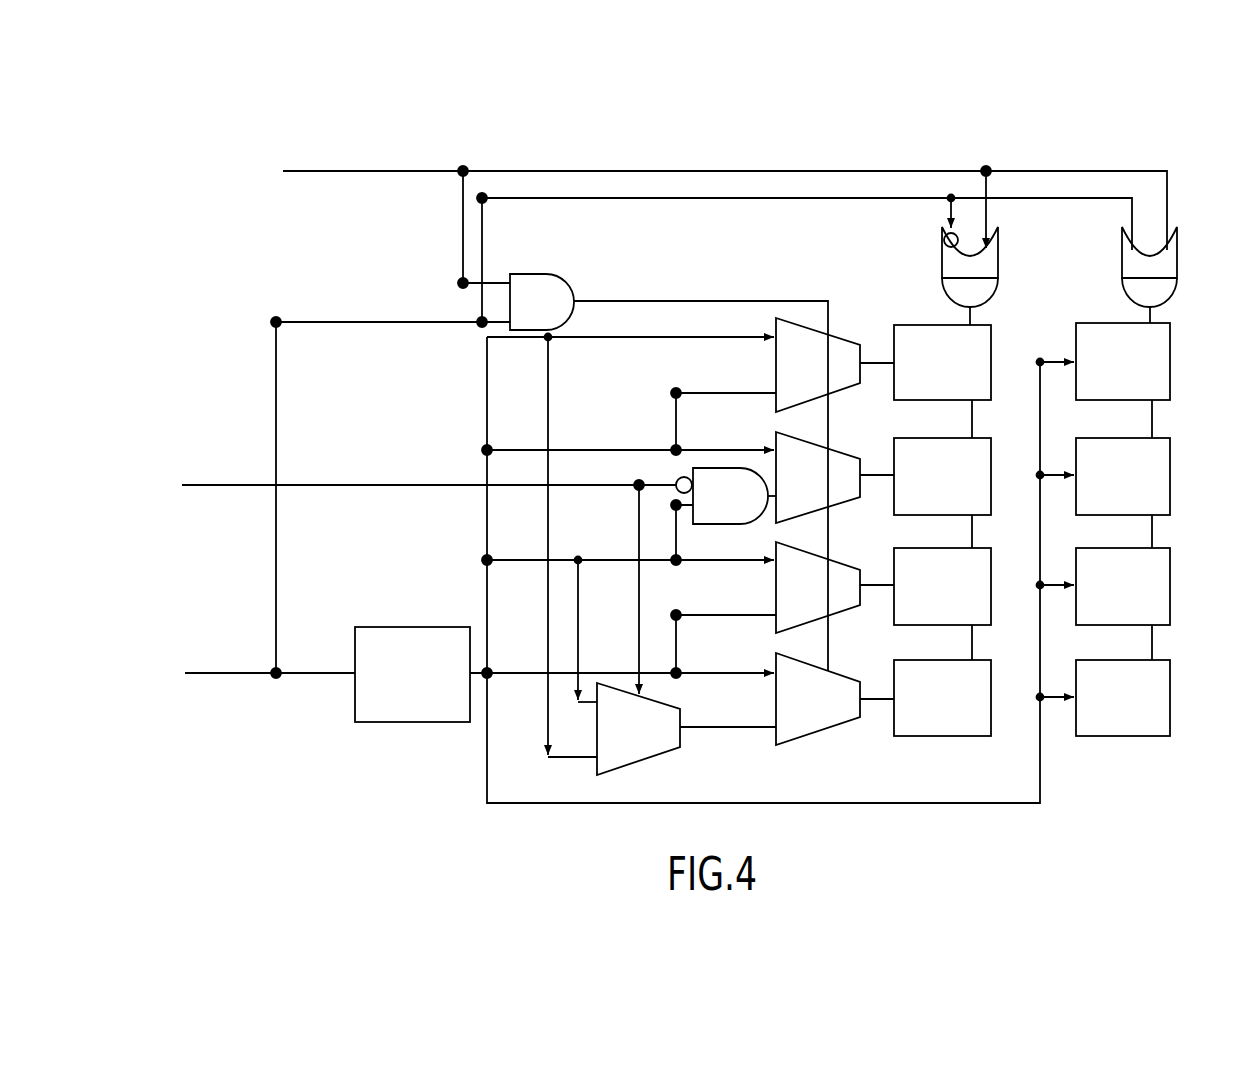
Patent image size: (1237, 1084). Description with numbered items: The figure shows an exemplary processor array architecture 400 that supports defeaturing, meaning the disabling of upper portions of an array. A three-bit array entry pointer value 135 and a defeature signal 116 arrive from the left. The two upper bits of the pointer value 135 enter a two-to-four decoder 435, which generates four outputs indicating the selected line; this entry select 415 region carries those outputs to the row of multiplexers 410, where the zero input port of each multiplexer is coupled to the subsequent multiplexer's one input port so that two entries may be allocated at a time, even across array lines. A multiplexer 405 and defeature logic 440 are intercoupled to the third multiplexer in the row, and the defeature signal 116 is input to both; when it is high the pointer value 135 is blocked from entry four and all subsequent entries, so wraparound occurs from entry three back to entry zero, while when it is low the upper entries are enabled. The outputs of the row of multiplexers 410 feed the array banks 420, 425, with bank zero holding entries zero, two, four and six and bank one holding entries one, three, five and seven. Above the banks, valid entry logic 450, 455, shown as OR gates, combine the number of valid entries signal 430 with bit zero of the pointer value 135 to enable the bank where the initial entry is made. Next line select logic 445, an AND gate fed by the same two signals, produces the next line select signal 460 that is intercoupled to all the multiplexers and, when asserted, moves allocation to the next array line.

The array architecture 400 is at (1228, 138).
The multiplexer 405 is at (660, 753).
The row of multiplexers 410 is at (863, 753).
The entry select 415 is at (515, 805).
The array bank 420 is at (990, 770).
The array bank 425 is at (1170, 770).
The number of valid entries signal 430 is at (408, 173).
The decoder 435 is at (405, 722).
The defeature logic 440 is at (668, 468).
The next line select logic 445 is at (527, 273).
The valid entry logic 450 is at (1183, 227).
The valid entry logic 455 is at (1003, 307).
The next line select signal 460 is at (795, 300).
The defeature signal 116 is at (338, 488).
The array entry pointer value 135 is at (188, 668).